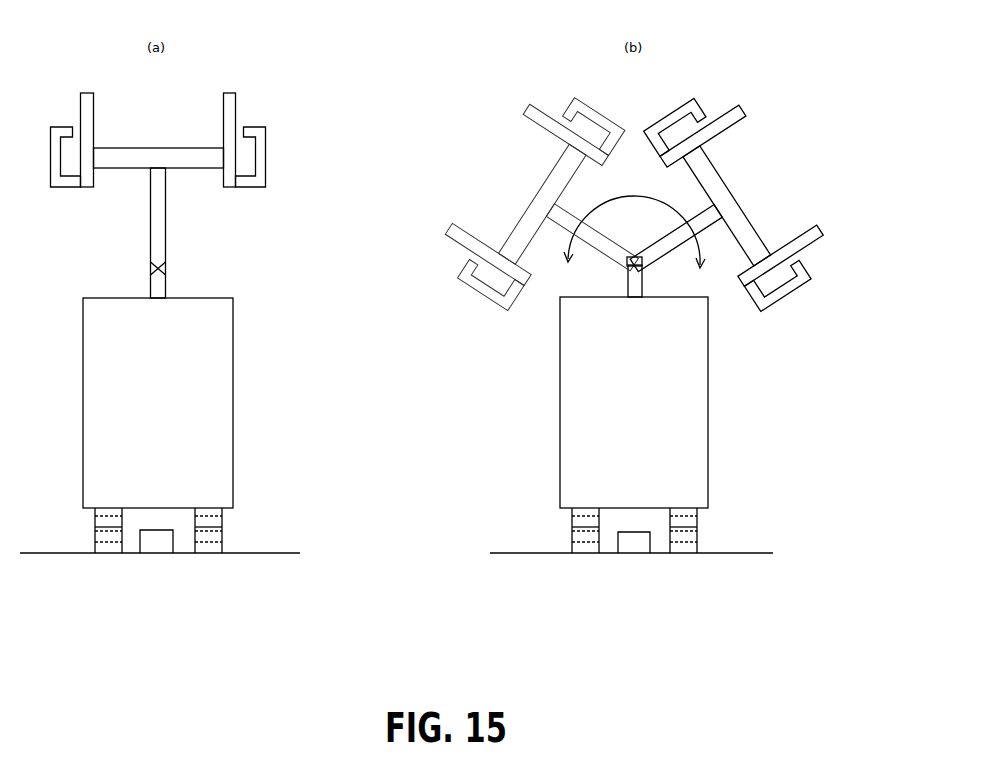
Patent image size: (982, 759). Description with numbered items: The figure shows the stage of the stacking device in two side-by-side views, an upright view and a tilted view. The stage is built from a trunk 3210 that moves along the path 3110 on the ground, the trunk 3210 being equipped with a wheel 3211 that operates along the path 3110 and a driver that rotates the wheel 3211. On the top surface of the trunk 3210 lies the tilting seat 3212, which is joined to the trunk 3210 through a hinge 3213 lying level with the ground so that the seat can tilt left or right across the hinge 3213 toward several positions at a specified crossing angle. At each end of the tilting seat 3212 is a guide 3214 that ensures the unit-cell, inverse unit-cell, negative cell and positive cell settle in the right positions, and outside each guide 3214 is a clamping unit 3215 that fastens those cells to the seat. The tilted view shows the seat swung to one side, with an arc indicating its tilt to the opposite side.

The path 3110 is at (158, 545).
The trunk 3210 is at (217, 422).
The wheel 3211 is at (213, 533).
The tilting seat 3212 is at (197, 170).
The hinge 3213 is at (150, 266).
The guide 3214 is at (233, 103).
The clamping unit 3215 is at (266, 160).